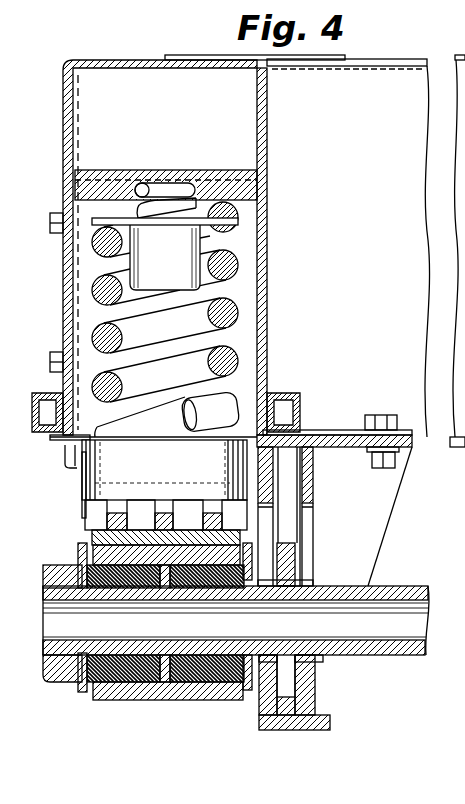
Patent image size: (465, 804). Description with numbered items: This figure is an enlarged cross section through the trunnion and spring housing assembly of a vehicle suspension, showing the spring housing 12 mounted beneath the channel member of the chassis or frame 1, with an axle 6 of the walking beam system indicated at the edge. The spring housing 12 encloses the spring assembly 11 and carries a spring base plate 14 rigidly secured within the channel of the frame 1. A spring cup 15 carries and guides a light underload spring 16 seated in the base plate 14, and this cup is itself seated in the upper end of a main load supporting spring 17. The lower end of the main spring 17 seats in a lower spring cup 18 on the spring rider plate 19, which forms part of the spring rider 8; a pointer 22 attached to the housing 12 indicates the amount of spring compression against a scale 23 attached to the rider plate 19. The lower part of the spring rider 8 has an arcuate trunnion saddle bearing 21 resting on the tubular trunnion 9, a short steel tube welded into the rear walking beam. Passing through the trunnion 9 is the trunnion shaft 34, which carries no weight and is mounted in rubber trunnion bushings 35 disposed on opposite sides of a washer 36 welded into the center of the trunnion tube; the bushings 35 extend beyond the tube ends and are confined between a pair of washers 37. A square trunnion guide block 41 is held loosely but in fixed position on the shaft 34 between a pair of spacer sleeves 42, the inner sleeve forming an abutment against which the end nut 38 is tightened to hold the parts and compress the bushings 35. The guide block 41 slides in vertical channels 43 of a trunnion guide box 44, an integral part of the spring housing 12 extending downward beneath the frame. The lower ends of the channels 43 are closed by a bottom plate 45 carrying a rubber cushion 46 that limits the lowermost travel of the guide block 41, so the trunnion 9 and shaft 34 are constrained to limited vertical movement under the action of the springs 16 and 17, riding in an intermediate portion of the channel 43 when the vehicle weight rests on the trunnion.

The chassis or frame 1 is at (248, 305).
The spring housing 12 is at (260, 283).
The spring assembly 11 is at (93, 272).
The spring base plate 14 is at (96, 172).
The spring cup 15 is at (238, 222).
The light underload spring 16 is at (182, 190).
The main load supporting spring 17 is at (232, 358).
The lower spring cup 18 is at (143, 468).
The spring rider plate 19 is at (88, 488).
The trunnion saddle bearing 21 is at (92, 530).
The pointer 22 is at (74, 455).
The spring rider 8 is at (210, 514).
The trunnion 9 is at (128, 694).
The trunnion shaft 34 is at (413, 586).
The rubber trunnion bushing 35 is at (110, 684).
The washer 36 is at (168, 683).
The washer 37 is at (80, 548).
The end nut 38 is at (62, 682).
The trunnion guide block 41 is at (297, 553).
The spacer sleeve 42 is at (266, 583).
The vertical channel 43 is at (287, 517).
The trunnion guide box 44 is at (313, 480).
The bottom plate 45 is at (331, 727).
The rubber cushion 46 is at (296, 707).
The scale 23 is at (457, 712).
The axle 6 is at (460, 794).